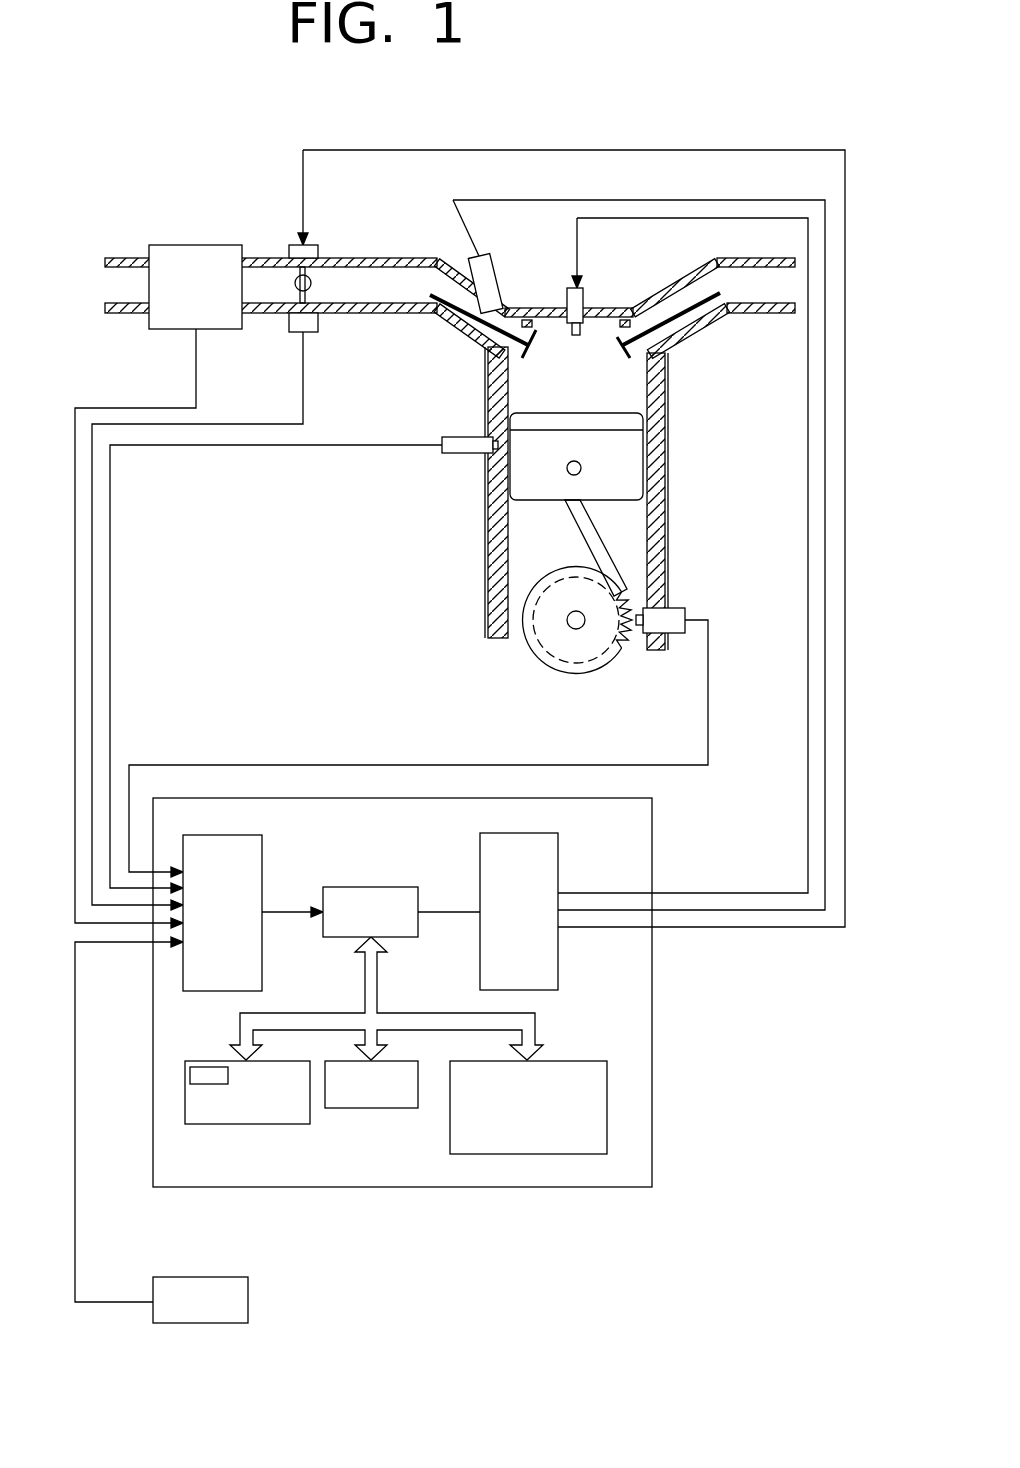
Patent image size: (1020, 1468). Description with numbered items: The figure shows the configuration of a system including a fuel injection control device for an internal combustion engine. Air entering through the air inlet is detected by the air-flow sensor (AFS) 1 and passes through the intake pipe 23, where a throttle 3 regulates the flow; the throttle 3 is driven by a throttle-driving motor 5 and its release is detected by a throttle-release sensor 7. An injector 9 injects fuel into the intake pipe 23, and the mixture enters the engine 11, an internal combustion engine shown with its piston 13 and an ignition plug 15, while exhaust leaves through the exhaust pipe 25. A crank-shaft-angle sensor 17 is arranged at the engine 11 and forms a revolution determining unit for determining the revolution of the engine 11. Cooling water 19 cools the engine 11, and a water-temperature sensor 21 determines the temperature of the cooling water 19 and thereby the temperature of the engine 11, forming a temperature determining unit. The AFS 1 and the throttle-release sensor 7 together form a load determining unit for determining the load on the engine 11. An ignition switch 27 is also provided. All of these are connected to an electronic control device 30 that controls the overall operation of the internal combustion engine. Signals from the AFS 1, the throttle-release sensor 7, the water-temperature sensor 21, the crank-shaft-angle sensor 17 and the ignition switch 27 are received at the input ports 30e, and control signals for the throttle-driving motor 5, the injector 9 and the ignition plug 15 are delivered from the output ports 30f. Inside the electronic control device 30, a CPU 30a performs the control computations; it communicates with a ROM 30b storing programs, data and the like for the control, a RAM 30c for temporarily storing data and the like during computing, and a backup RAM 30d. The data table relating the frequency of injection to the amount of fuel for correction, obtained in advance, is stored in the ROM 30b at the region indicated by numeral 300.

The air-flow sensor 1 is at (205, 245).
The throttle 3 is at (295, 277).
The throttle-driving motor 5 is at (318, 248).
The throttle-release sensor 7 is at (318, 332).
The injector 9 is at (490, 278).
The engine 11 is at (658, 398).
The piston 13 is at (622, 463).
The ignition plug 15 is at (583, 300).
The crank-shaft-angle sensor 17 is at (673, 610).
The cooling water 19 is at (493, 565).
The water-temperature sensor 21 is at (465, 437).
The intake pipe 23 is at (458, 330).
The exhaust pipe 25 is at (735, 313).
The ignition switch 27 is at (200, 1277).
The electronic control device 30 is at (654, 820).
The CPU 30a is at (372, 886).
The ROM 30b is at (263, 1126).
The RAM 30c is at (372, 1110).
The backup RAM 30d is at (527, 1156).
The input ports 30e is at (264, 868).
The output ports 30f is at (480, 868).
The data table 300 is at (187, 1083).